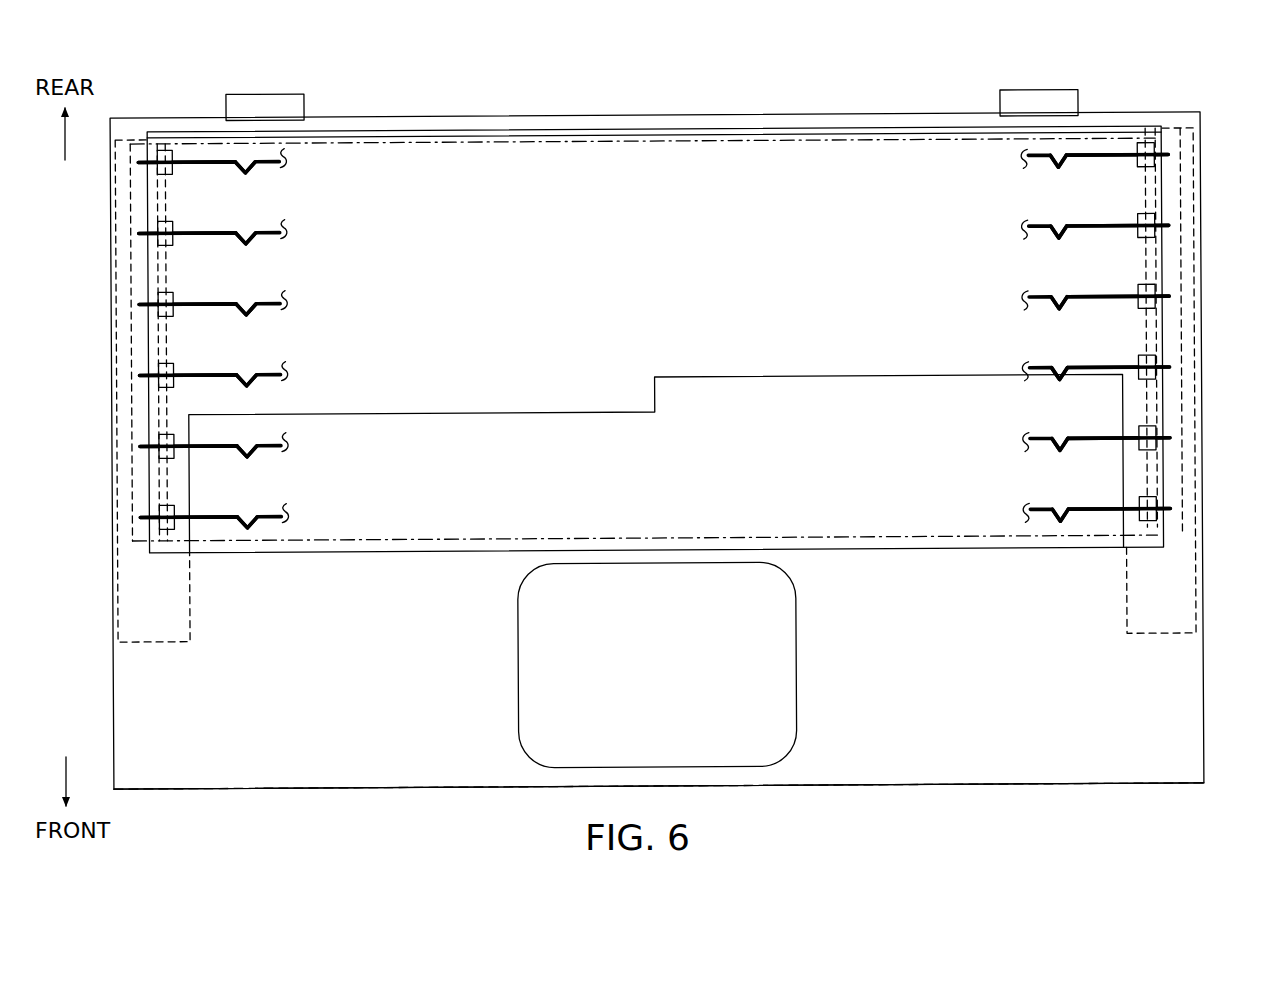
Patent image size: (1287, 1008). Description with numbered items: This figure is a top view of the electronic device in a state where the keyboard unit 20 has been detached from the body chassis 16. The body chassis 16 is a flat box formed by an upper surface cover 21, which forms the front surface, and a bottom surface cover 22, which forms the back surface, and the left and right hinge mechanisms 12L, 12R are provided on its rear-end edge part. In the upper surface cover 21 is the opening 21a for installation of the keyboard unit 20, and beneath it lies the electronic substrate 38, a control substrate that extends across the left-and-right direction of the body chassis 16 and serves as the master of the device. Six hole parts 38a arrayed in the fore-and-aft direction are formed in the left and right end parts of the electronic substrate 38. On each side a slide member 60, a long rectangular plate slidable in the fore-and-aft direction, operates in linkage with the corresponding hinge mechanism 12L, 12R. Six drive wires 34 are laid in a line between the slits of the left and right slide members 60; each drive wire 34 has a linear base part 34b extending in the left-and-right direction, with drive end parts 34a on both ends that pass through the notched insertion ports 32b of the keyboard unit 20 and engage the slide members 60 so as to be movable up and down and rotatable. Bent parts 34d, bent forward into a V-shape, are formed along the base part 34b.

The body chassis 16 is at (980, 834).
The upper surface cover 21 is at (908, 781).
The bottom surface cover 22 is at (958, 781).
The left hinge mechanism 12L is at (263, 104).
The right hinge mechanism 12R is at (1039, 100).
The keyboard unit 20 is at (343, 557).
The opening 21a is at (424, 538).
The electronic substrate 38 is at (403, 419).
The hole parts 38a is at (175, 226).
The slide member 60 is at (130, 200).
The insertion ports 32b is at (174, 153).
The drive wire 34 is at (268, 167).
The drive end part 34a is at (142, 236).
The base part 34b is at (197, 238).
The bent part 34d is at (250, 243).